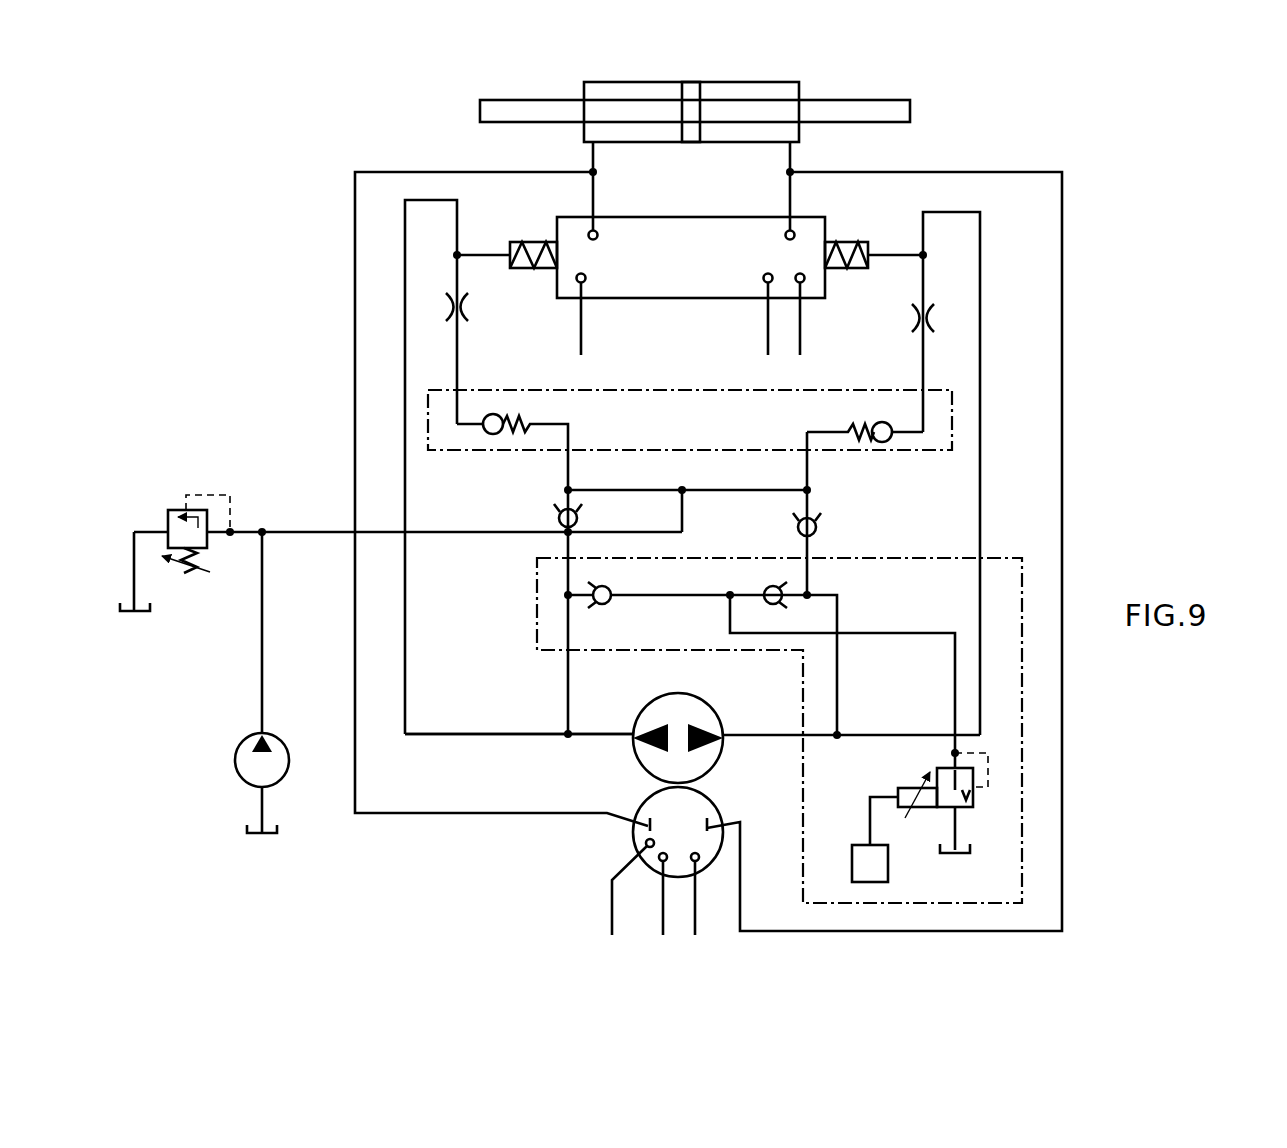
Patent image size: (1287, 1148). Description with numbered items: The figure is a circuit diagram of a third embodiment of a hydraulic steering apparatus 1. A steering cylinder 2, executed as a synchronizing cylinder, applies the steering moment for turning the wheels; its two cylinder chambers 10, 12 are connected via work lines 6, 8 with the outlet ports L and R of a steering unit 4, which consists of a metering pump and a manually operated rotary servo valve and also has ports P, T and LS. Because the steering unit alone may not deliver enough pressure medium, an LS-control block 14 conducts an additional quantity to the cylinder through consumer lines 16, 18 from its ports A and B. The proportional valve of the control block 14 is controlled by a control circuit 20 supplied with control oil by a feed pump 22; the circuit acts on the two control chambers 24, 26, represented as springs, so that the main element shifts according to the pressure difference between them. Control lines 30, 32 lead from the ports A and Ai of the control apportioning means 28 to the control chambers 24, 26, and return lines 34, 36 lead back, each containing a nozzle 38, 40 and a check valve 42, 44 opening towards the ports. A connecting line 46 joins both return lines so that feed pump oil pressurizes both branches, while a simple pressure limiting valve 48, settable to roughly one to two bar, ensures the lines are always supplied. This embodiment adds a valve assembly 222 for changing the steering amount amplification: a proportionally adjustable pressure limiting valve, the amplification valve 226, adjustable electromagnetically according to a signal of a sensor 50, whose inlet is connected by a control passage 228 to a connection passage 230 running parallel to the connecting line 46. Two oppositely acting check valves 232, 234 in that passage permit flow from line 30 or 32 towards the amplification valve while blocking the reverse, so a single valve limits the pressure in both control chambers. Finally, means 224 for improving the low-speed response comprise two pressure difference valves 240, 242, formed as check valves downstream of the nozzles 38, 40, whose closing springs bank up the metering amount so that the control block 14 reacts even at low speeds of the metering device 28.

The steering apparatus 1 is at (1105, 162).
The steering cylinder 2 is at (672, 146).
The steering unit 4 is at (697, 808).
The work line 6 is at (352, 352).
The work line 8 is at (1064, 351).
The cylinder chamber 10 is at (587, 132).
The cylinder chamber 12 is at (797, 135).
The LS-control block 14 is at (660, 283).
The consumer line 16 is at (596, 193).
The consumer line 18 is at (787, 196).
The control circuit 20 is at (990, 443).
The feed pump 22 is at (271, 774).
The control chamber 24 is at (522, 270).
The control chamber 26 is at (853, 272).
The control apportioning means 28 is at (683, 702).
The control line 30 is at (483, 733).
The control line 32 is at (905, 733).
The return line 34 is at (572, 426).
The return line 36 is at (800, 434).
The nozzle 38 is at (447, 302).
The nozzle 40 is at (930, 318).
The check valve 42 is at (560, 512).
The check valve 44 is at (815, 520).
The connecting line 46 is at (762, 490).
The pressure limiting valve 48 is at (179, 508).
The sensor 50 is at (860, 862).
The valve assembly 222 is at (1030, 812).
The means for improving the response characteristic 224 is at (952, 400).
The amplification valve 226 is at (975, 800).
The control passage 228 is at (957, 718).
The connection passage 230 is at (680, 592).
The check valve 232 is at (593, 600).
The check valve 234 is at (780, 600).
The pressure difference valve 240 is at (483, 428).
The pressure difference valve 242 is at (893, 438).